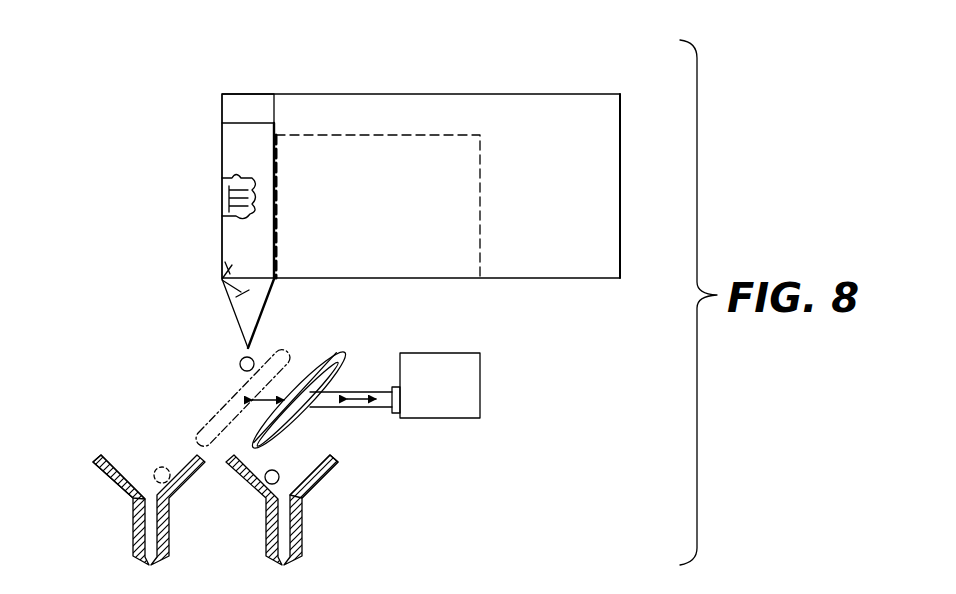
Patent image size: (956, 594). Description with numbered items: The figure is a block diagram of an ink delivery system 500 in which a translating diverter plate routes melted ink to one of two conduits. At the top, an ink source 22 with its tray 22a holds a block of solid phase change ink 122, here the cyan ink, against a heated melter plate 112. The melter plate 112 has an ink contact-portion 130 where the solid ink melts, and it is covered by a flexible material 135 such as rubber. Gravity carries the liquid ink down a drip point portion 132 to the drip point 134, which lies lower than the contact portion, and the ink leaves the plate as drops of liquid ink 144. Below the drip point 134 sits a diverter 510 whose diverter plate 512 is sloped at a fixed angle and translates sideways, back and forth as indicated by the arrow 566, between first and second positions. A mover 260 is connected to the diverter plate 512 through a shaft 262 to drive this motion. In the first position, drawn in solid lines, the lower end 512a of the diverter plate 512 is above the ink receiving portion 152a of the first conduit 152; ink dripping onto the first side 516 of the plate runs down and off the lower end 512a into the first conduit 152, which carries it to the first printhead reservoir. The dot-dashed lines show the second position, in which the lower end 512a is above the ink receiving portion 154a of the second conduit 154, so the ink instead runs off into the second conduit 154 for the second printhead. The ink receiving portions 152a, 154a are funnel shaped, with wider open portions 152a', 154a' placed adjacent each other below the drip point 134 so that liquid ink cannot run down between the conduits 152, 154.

The ink delivery system 500 is at (117, 75).
The ink source 22 is at (592, 94).
The tray 22a is at (618, 158).
The melter plate 112 is at (250, 116).
The cyan solid ink 122 is at (378, 206).
The ink contact-portion 130 is at (222, 190).
The drip point portion 132 is at (233, 311).
The drip point 134 is at (251, 348).
The flexible material 135 is at (222, 279).
The drops of liquid ink 144 is at (241, 359).
The diverter 510 is at (125, 385).
The diverter plate 512 is at (327, 372).
The lower end of the diverter plate 512a is at (251, 448).
The first side of the diverter plate 516 is at (210, 420).
The arrow 566 is at (272, 397).
The mover 260 is at (440, 385).
The drive shaft 262 is at (365, 408).
The first conduit 152 is at (298, 543).
The ink receiving portion of the first conduit 152a is at (349, 483).
The open portion of the first ink receiving portion 152a' is at (364, 459).
The second conduit 154 is at (133, 533).
The ink receiving portion of the second conduit 154a is at (95, 481).
The open portion of the second ink receiving portion 154a' is at (84, 447).